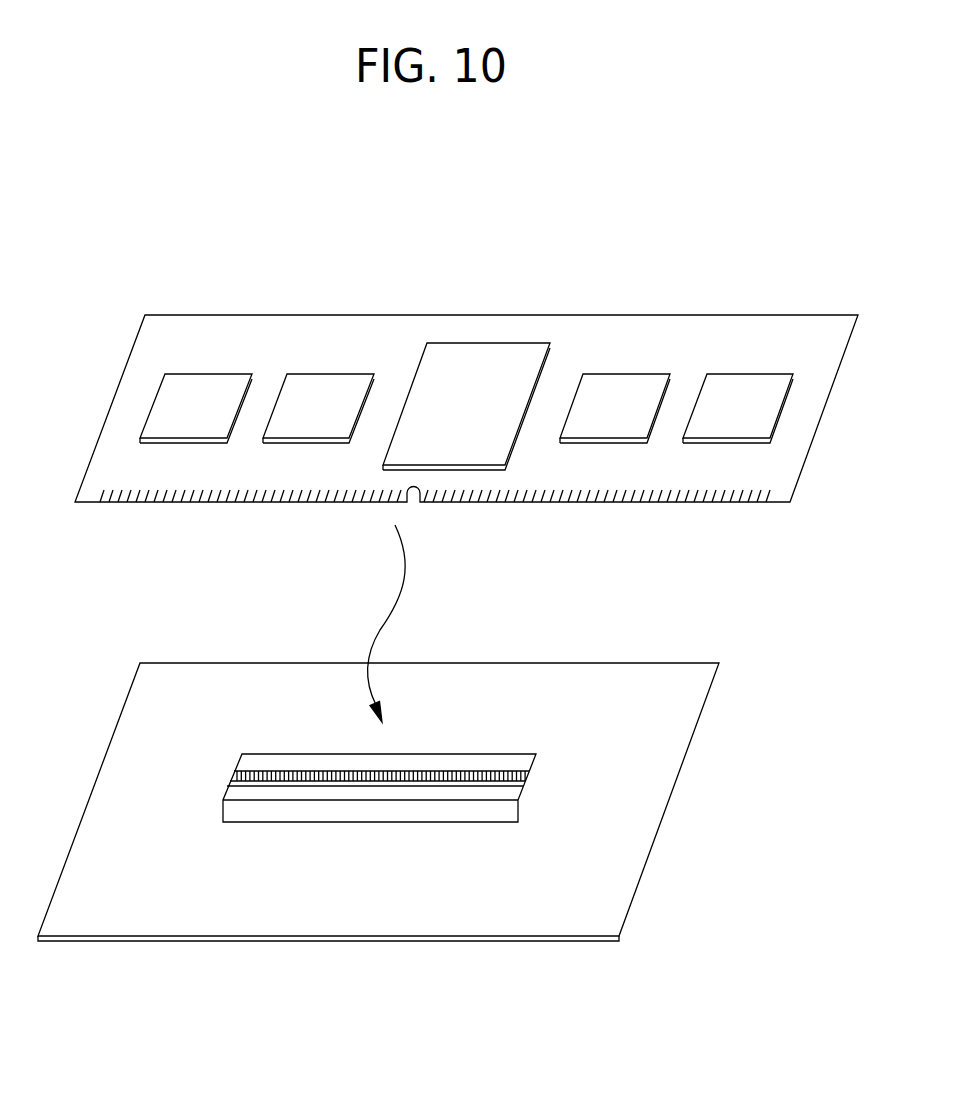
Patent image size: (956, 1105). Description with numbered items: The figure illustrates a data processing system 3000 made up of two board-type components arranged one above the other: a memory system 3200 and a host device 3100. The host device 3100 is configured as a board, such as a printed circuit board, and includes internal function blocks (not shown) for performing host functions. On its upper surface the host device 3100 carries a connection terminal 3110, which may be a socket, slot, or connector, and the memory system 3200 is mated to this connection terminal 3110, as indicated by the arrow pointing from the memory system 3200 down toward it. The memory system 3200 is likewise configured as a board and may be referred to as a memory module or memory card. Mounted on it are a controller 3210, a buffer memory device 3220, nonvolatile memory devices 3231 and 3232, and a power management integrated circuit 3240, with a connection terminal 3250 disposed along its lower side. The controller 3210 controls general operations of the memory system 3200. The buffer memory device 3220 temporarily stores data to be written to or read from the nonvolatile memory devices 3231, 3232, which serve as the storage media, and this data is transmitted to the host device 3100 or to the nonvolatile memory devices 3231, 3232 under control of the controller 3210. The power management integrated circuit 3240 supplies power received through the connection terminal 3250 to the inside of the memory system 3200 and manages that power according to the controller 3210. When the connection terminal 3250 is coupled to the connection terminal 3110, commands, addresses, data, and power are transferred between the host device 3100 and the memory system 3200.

The data processing system 3000 is at (248, 262).
The memory system 3200 is at (466, 408).
The controller 3210 is at (466, 406).
The buffer memory device 3220 is at (318, 408).
The nonvolatile memory device 3231 is at (615, 408).
The nonvolatile memory device 3232 is at (738, 408).
The power management integrated circuit 3240 is at (196, 408).
The connection terminal 3250 is at (120, 503).
The host device 3100 is at (378, 802).
The connection terminal 3110 is at (561, 744).